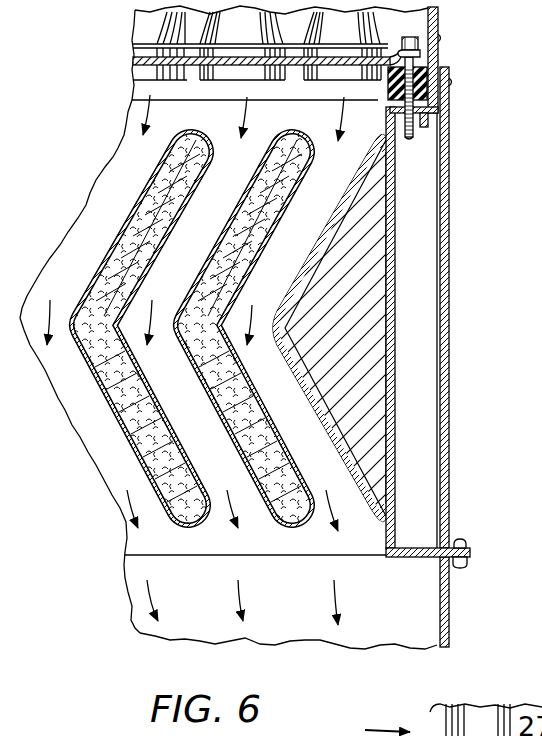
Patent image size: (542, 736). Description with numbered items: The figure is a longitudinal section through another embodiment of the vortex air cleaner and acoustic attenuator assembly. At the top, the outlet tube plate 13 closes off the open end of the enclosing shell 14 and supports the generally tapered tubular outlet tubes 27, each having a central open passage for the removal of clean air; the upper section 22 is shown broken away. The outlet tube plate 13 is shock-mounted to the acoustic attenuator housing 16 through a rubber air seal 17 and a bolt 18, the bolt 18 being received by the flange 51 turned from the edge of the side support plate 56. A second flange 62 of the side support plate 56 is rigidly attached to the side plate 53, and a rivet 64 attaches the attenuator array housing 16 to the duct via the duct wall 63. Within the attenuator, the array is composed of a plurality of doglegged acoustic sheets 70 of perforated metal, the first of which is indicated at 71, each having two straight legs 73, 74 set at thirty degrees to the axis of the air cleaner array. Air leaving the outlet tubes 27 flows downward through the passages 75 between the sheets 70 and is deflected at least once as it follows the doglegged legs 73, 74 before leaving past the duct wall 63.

The outlet tube plate 13 is at (133, 62).
The enclosing shell 14 is at (420, 55).
The acoustic attenuator housing 16 is at (488, 357).
The rubber air seal 17 is at (389, 98).
The bolt 18 is at (411, 34).
The upper filter section 22 is at (133, 27).
The outlet tube 27 is at (251, 38).
The flange 51 is at (427, 126).
The side plate 53 is at (449, 213).
The side support plate 56 is at (396, 354).
The flange 62 is at (411, 547).
The duct wall 63 is at (449, 623).
The rivet 64 is at (459, 540).
The doglegged acoustic sheet 70 is at (128, 190).
The chevron filter element 71 is at (228, 224).
The straight leg 73 is at (288, 298).
The straight leg 74 is at (318, 420).
The passage 75 is at (327, 327).